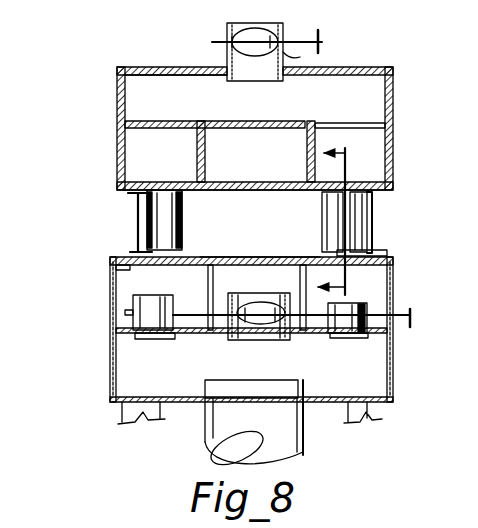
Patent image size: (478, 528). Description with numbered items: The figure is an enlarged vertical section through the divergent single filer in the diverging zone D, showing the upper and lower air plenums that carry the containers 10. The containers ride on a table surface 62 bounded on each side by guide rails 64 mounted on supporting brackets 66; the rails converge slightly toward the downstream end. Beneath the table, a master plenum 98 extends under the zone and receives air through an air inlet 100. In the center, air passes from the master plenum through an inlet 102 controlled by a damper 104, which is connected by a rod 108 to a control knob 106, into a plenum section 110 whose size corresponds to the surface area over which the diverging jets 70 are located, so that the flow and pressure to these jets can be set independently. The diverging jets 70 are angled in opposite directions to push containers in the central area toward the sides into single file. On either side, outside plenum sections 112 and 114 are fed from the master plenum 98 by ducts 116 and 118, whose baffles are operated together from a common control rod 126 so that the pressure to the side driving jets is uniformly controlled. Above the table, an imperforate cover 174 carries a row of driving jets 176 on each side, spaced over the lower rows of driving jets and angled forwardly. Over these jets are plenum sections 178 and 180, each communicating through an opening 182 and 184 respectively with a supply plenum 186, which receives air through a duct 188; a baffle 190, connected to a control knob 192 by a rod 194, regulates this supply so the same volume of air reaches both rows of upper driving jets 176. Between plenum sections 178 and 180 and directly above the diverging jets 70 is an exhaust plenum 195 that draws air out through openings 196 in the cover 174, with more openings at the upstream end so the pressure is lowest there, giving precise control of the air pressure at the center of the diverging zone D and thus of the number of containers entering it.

The containers 10 is at (75, 245).
The table surface 62 is at (252, 256).
The guide rails 64 is at (142, 206).
The supporting brackets 66 is at (165, 228).
The diverging jets 70 is at (205, 258).
The master plenum 98 is at (183, 383).
The air inlet 100 is at (288, 438).
The inlet 102 is at (278, 330).
The damper 104 is at (258, 328).
The control knob 106 is at (410, 311).
The rod 108 is at (410, 328).
The plenum section 110 is at (270, 291).
The outside plenum section 112 is at (393, 257).
The outside plenum section 114 is at (130, 283).
The duct 116 is at (375, 345).
The duct 118 is at (150, 340).
The common control rod 126 is at (125, 312).
The imperforate cover 174 is at (304, 180).
The driving jets 176 is at (130, 184).
The plenum section 178 is at (388, 165).
The plenum section 180 is at (180, 160).
The opening 182 is at (368, 122).
The opening 184 is at (148, 120).
The supply plenum 186 is at (327, 105).
The duct 188 is at (291, 27).
The baffle 190 is at (244, 36).
The control knob 192 is at (322, 40).
The rod 194 is at (300, 52).
The exhaust plenum 195 is at (224, 104).
The openings 196 is at (288, 196).
The diverging zone D is at (92, 400).